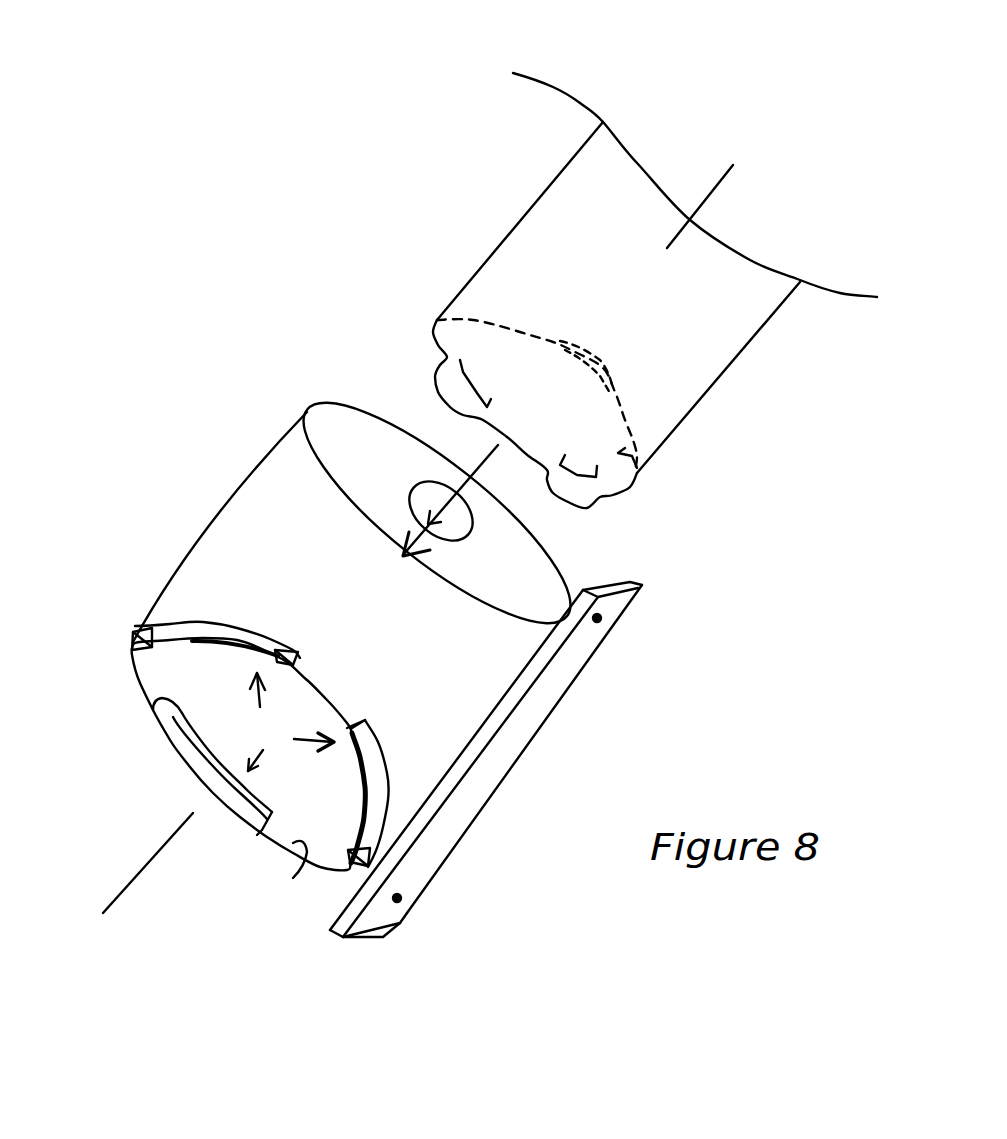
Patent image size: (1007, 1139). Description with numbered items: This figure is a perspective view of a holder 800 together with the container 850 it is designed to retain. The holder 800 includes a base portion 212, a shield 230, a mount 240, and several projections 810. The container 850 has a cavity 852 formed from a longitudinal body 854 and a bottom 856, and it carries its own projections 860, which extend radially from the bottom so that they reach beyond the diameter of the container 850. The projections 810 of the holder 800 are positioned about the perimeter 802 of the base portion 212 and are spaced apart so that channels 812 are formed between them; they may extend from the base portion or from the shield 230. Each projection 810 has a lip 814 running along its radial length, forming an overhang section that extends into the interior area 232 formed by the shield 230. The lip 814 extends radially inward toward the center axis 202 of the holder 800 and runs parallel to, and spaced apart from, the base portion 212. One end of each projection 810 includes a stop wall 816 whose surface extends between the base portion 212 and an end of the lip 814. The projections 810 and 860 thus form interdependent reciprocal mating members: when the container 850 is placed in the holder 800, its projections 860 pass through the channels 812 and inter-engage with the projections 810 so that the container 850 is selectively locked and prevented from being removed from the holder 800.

The container 850 is at (393, 107).
The cavity 852 is at (628, 202).
The longitudinal body 854 is at (750, 340).
The bottom 856 is at (636, 470).
The projections 860 is at (423, 367).
The holder 800 is at (142, 408).
The shield 230 is at (305, 410).
The interior area 232 is at (353, 448).
The perimeter 802 is at (130, 657).
The projections 810 is at (291, 742).
The channels 812 is at (338, 676).
The lip 814 is at (199, 634).
The stop wall 816 is at (290, 656).
The base portion 212 is at (302, 858).
The center axis 202 is at (143, 870).
The mount 240 is at (567, 690).